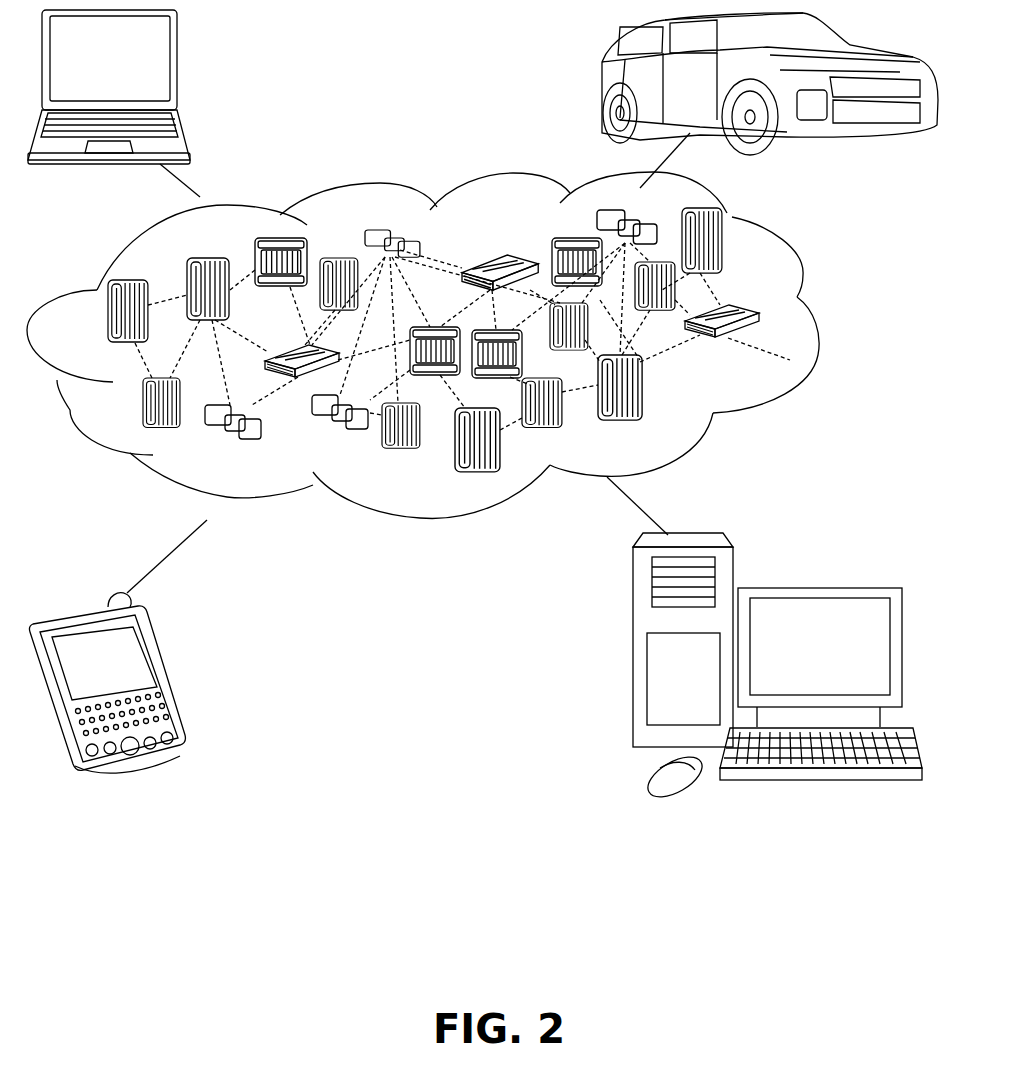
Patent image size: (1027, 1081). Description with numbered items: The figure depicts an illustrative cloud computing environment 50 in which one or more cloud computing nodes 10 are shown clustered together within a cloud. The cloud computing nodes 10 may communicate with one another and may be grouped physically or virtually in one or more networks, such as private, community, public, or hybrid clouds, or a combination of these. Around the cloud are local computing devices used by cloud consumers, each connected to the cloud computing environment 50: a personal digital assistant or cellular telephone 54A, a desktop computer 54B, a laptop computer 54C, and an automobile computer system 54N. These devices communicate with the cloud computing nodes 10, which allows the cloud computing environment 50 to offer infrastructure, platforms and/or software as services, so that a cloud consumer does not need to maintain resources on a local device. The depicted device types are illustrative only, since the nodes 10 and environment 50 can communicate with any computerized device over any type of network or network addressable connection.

The cloud computing environment 50 is at (800, 312).
The cloud computing node 10 is at (768, 352).
The personal digital assistant or cellular telephone 54A is at (167, 677).
The desktop computer 54B is at (818, 588).
The laptop computer 54C is at (178, 68).
The automobile computer system 54N is at (602, 82).